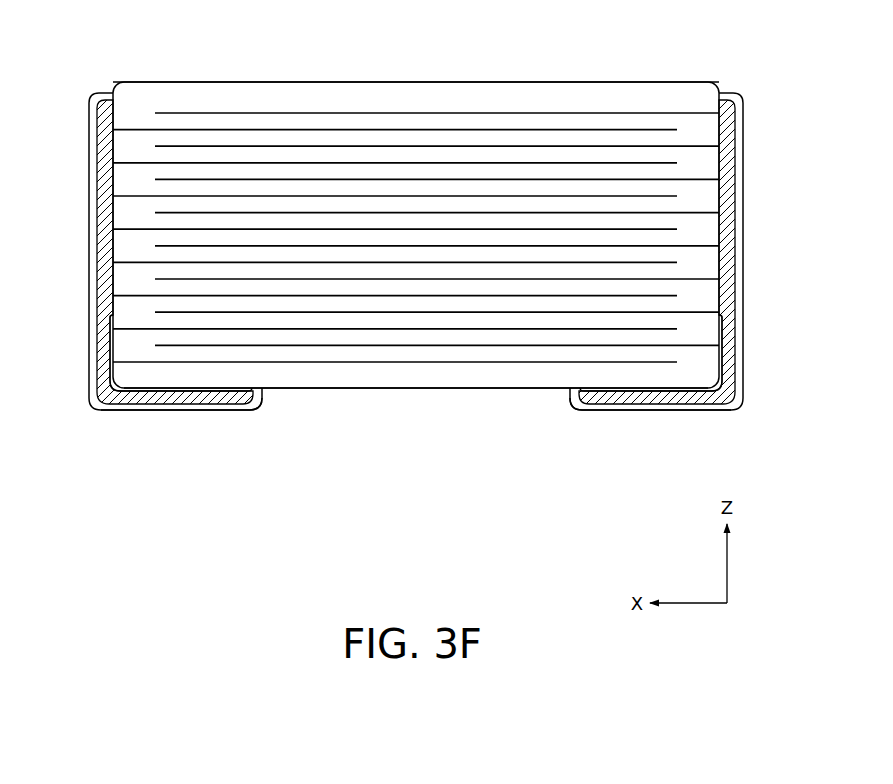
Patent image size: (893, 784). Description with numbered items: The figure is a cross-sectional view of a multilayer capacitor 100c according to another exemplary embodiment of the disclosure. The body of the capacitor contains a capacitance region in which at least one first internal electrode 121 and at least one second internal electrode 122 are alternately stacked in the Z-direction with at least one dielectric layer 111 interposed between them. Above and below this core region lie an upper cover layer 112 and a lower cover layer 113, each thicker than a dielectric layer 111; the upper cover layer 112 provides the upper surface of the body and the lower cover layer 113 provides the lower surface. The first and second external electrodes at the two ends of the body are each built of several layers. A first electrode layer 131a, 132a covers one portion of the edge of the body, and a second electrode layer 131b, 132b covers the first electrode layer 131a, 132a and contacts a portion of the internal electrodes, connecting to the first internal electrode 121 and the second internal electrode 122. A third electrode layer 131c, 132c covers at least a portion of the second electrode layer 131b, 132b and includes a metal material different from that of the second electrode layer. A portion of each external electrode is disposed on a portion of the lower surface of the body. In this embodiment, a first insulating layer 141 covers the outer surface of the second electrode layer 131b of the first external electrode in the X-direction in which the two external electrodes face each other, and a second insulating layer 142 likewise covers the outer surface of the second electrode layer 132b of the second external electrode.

The multilayer capacitor 100c is at (397, 25).
The dielectric layer 111 is at (300, 121).
The upper cover layer 112 is at (365, 93).
The lower cover layer 113 is at (415, 381).
The first internal electrode 121 is at (143, 128).
The second internal electrode 122 is at (223, 112).
The first electrode layer 131a is at (97, 347).
The second electrode layer 131b is at (148, 399).
The third electrode layer 131c is at (204, 410).
The first electrode layer 132a is at (700, 391).
The second electrode layer 132b is at (652, 398).
The third electrode layer 132c is at (600, 410).
The first insulating layer 141 is at (88, 280).
The second insulating layer 142 is at (742, 258).